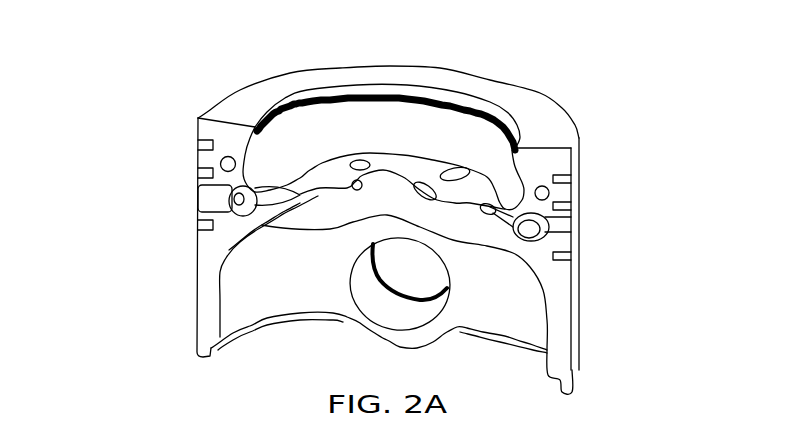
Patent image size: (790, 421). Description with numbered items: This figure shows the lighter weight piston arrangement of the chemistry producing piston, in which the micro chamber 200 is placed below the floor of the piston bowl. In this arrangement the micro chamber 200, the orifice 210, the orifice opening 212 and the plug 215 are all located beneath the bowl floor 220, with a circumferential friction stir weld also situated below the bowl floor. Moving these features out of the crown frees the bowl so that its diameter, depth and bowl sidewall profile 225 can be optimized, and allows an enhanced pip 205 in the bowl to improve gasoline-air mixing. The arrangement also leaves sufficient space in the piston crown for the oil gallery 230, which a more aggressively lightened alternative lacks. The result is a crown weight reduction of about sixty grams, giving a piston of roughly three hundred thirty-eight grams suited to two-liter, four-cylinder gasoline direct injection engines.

The micro chamber 200 is at (233, 199).
The pip 205 is at (400, 183).
The orifice 210 is at (255, 218).
The orifice opening 212 is at (225, 257).
The plug 215 is at (568, 228).
The bowl floor 220 is at (470, 190).
The bowl sidewall profile 225 is at (530, 175).
The oil gallery 230 is at (198, 148).